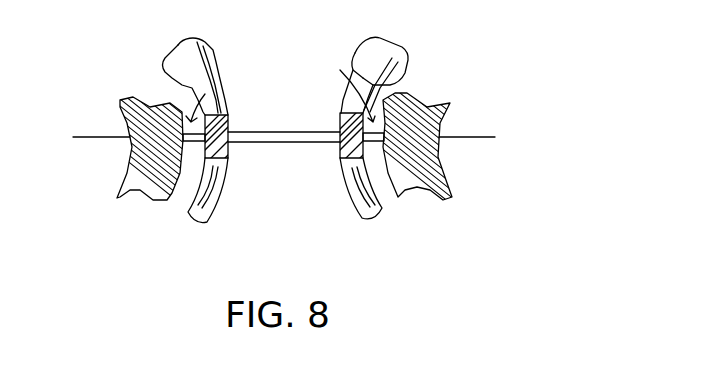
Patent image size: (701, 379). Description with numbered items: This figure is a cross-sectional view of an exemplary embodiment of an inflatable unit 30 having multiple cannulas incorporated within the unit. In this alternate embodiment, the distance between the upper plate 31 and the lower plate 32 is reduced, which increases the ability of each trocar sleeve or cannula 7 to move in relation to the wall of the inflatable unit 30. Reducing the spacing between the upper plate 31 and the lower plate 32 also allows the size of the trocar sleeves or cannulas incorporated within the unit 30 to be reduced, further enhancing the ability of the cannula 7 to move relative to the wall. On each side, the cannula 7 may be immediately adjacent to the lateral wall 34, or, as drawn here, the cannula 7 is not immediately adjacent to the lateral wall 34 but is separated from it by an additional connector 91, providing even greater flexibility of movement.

The inflatable unit 30 is at (499, 52).
The upper plate 31 is at (308, 130).
The lower plate 32 is at (252, 144).
The additional connector 91 is at (340, 70).
The trocar sleeve or cannula 7 is at (177, 42).
The lateral wall 34 is at (145, 198).